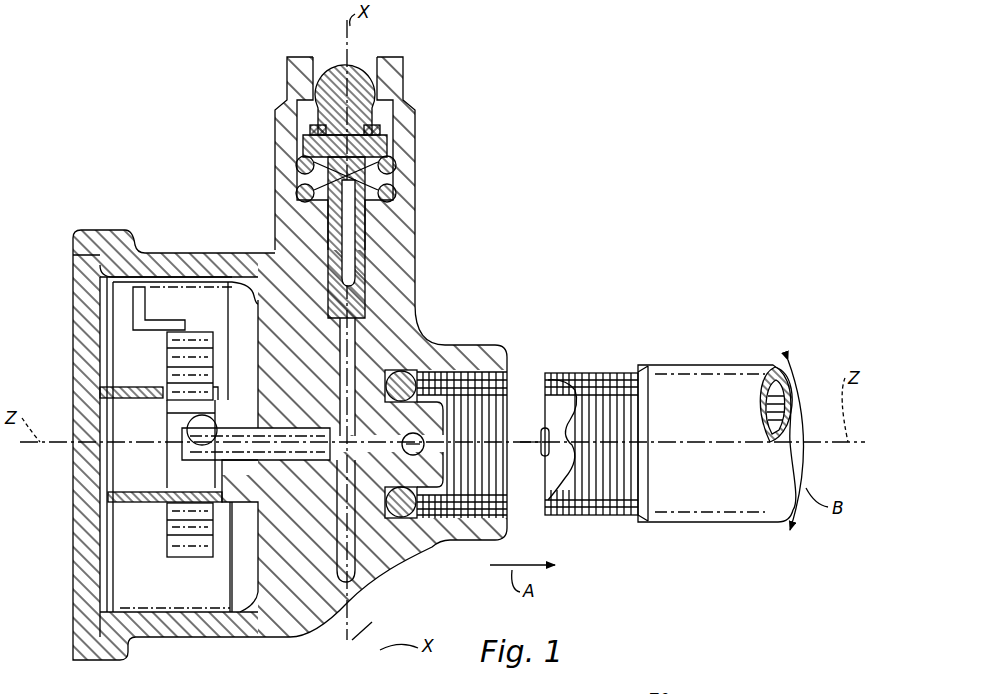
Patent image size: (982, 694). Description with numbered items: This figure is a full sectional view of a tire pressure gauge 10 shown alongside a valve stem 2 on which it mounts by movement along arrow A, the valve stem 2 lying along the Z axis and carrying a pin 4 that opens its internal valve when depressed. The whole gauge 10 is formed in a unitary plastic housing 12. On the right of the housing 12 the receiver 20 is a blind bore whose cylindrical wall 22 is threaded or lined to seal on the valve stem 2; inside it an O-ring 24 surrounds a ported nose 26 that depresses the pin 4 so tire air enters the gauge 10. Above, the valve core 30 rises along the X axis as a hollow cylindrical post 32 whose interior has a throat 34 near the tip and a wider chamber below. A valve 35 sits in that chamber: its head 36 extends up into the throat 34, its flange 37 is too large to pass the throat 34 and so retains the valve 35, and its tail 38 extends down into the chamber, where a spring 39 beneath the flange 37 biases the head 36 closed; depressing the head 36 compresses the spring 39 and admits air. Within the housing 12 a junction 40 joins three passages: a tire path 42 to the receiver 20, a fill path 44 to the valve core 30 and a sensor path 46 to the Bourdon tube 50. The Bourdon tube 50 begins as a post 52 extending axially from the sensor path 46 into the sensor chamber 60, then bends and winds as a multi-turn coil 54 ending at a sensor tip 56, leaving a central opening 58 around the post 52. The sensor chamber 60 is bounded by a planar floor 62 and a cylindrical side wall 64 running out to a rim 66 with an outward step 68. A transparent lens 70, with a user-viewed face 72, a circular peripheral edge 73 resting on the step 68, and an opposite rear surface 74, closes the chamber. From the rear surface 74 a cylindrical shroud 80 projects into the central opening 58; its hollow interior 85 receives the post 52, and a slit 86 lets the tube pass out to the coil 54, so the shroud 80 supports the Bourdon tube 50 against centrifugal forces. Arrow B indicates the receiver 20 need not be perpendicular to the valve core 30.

The valve stem 2 is at (705, 372).
The pin 4 is at (545, 428).
The gauge 10 is at (540, 215).
The housing 12 is at (300, 617).
The receiver 20 is at (483, 330).
The cylindrical wall 22 is at (490, 498).
The O-ring 24 is at (405, 372).
The nose 26 is at (413, 520).
The valve core 30 is at (262, 130).
The cylindrical post 32 is at (408, 165).
The throat 34 is at (333, 68).
The valve 35 is at (355, 135).
The head 36 is at (365, 78).
The flange 37 is at (378, 130).
The tail 38 is at (340, 226).
The spring 39 is at (298, 165).
The junction 40 is at (340, 582).
The tire path 42 is at (345, 548).
The fill path 44 is at (352, 333).
The sensor path 46 is at (250, 484).
The Bourdon tube 50 is at (167, 350).
The post 52 is at (180, 455).
The coil 54 is at (180, 548).
The sensor tip 56 is at (150, 290).
The central opening 58 is at (178, 406).
The sensor chamber 60 is at (195, 300).
The floor 62 is at (250, 280).
The side wall 64 is at (168, 598).
The rim 66 is at (72, 652).
The step 68 is at (95, 626).
The lens 70 is at (78, 520).
The face 72 is at (76, 575).
The peripheral edge 73 is at (96, 660).
The rear surface 74 is at (105, 300).
The shroud 80 is at (150, 500).
The interior 85 is at (130, 478).
The slit 86 is at (157, 385).